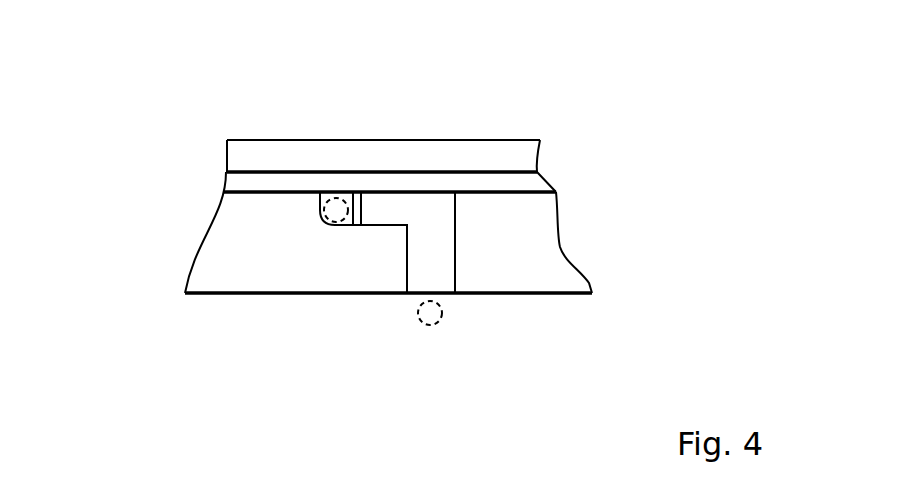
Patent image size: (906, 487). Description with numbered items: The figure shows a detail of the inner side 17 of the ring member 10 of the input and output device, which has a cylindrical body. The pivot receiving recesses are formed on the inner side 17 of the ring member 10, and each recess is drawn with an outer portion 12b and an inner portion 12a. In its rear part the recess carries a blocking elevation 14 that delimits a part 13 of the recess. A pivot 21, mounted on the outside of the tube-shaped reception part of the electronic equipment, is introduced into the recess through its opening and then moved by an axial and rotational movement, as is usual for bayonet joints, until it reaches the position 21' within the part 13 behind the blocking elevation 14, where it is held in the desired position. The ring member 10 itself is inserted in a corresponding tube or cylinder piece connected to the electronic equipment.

The ring member 10 is at (258, 294).
The inner wall portion 12a is at (440, 252).
The upper flange portion 12b is at (391, 205).
The part of the pivot receiving recess 13 is at (318, 219).
The blocking elevation 14 is at (359, 226).
The inner side 17 is at (525, 275).
The pivot 21 is at (421, 361).
The sealing ring (alternative position) 21' is at (312, 117).